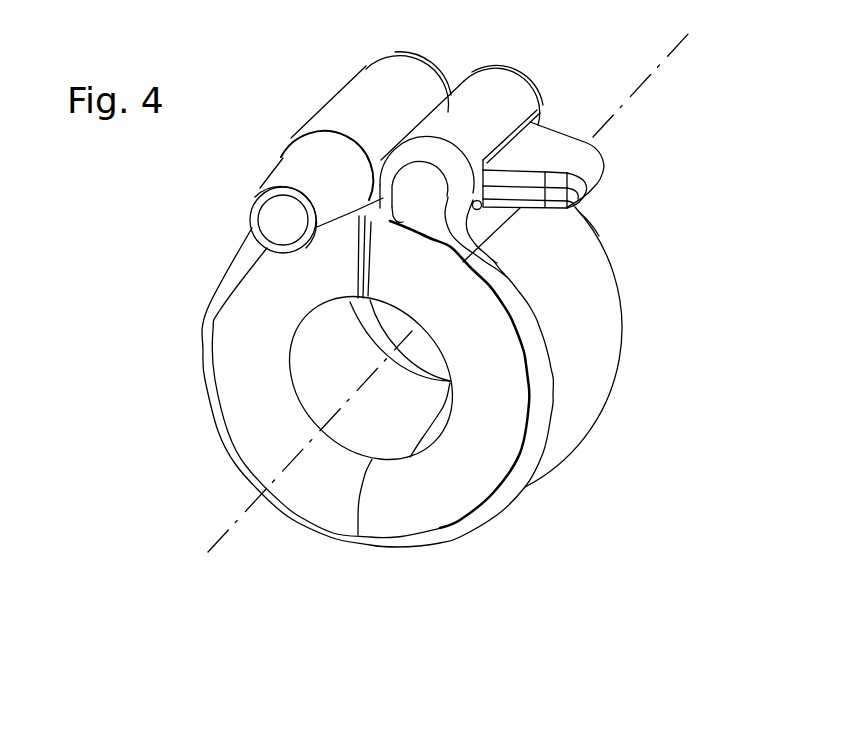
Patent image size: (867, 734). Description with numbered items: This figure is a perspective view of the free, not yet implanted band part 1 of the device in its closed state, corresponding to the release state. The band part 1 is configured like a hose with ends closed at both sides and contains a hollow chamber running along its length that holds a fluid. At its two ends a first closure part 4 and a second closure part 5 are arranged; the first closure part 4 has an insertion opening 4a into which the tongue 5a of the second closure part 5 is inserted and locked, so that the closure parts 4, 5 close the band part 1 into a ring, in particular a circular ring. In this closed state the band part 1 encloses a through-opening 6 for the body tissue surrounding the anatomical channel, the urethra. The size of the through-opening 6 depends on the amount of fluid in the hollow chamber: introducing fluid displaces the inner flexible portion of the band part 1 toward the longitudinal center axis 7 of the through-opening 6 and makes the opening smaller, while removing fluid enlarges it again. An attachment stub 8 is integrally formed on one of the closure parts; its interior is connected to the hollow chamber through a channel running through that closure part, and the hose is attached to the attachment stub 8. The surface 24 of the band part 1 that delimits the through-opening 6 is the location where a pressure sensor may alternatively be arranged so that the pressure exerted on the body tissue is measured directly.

The band part 1 is at (328, 573).
The first closure part 4 is at (490, 100).
The insertion opening 4a is at (537, 110).
The second closure part 5 is at (372, 100).
The tongue 5a is at (547, 157).
The through-opening 6 is at (427, 347).
The longitudinal center axis 7 is at (240, 513).
The attachment stub 8 is at (302, 170).
The surface 24 is at (337, 365).